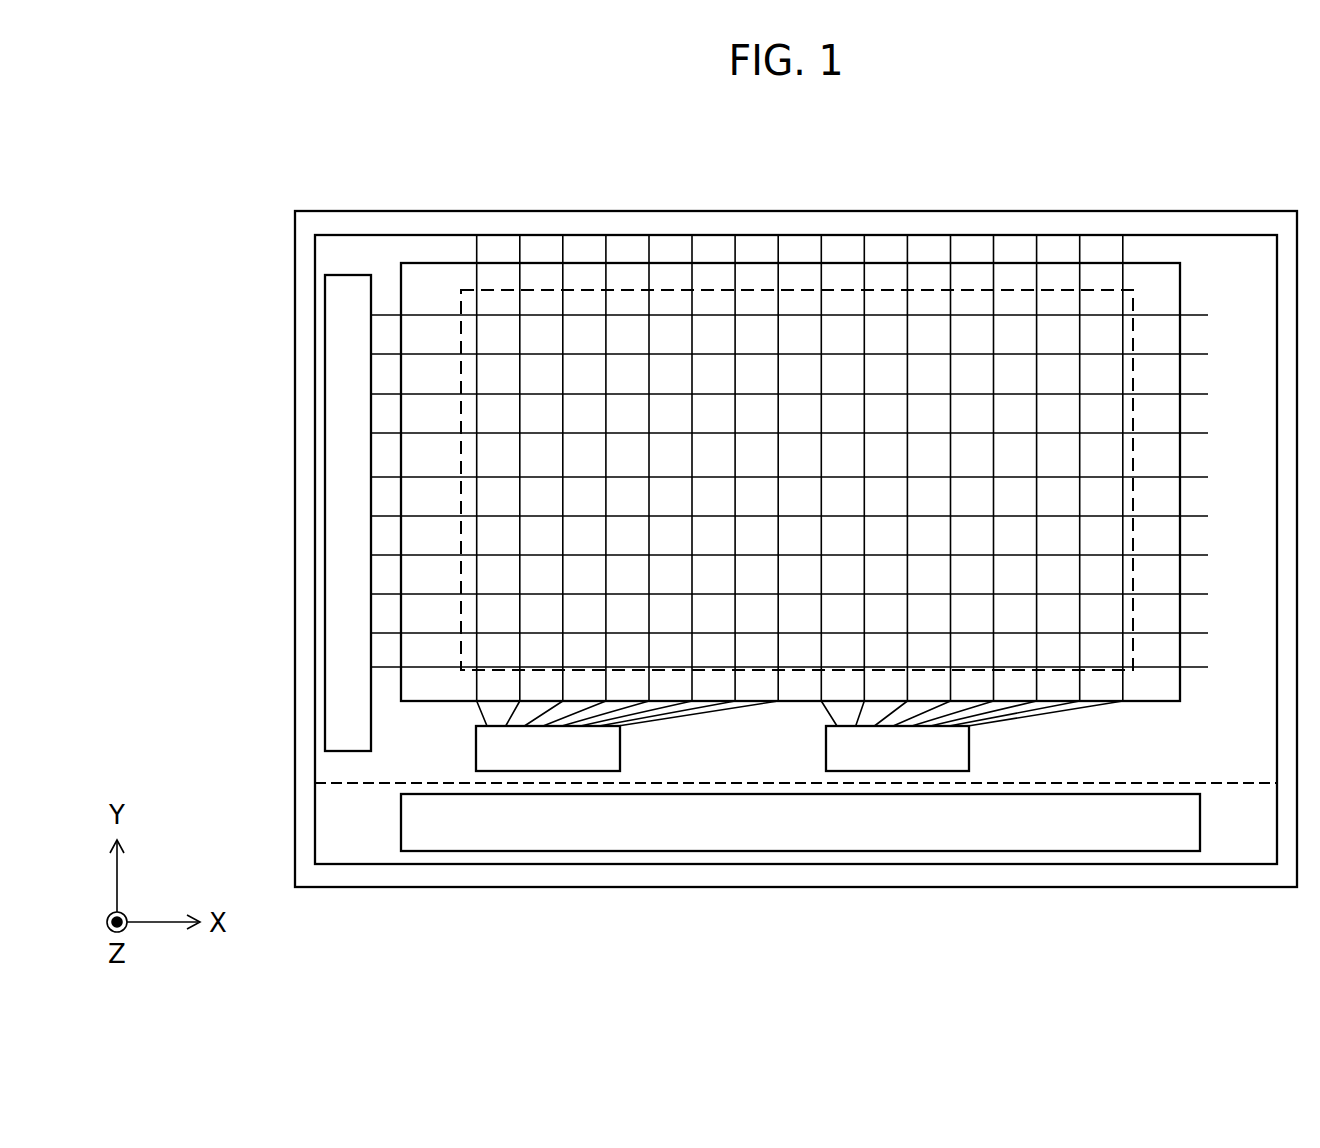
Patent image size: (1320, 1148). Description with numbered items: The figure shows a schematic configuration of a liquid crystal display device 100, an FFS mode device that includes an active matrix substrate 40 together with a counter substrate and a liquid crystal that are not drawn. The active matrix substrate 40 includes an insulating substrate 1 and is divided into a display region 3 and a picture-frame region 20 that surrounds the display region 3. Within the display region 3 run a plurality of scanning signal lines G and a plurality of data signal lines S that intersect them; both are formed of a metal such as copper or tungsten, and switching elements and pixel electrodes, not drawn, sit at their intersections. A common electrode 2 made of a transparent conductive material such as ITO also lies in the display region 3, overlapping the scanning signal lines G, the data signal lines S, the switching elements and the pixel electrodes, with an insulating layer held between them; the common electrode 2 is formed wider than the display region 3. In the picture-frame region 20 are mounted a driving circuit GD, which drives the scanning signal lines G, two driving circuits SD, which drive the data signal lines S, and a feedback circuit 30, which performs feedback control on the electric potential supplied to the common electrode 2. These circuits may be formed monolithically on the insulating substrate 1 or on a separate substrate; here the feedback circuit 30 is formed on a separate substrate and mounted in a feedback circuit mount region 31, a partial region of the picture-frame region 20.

The liquid crystal display device 100 is at (399, 106).
The active matrix substrate 40 is at (1256, 232).
The insulating substrate 1 is at (1207, 235).
The common electrode 2 is at (1150, 263).
The display region 3 is at (1020, 289).
The driving circuit GD is at (346, 275).
The scanning signal lines G is at (1193, 477).
The data signal lines S is at (1122, 685).
The driving circuits SD is at (722, 748).
The picture-frame region 20 is at (1227, 752).
The feedback circuit mount region 31 is at (1227, 847).
The feedback circuit 30 is at (1100, 851).